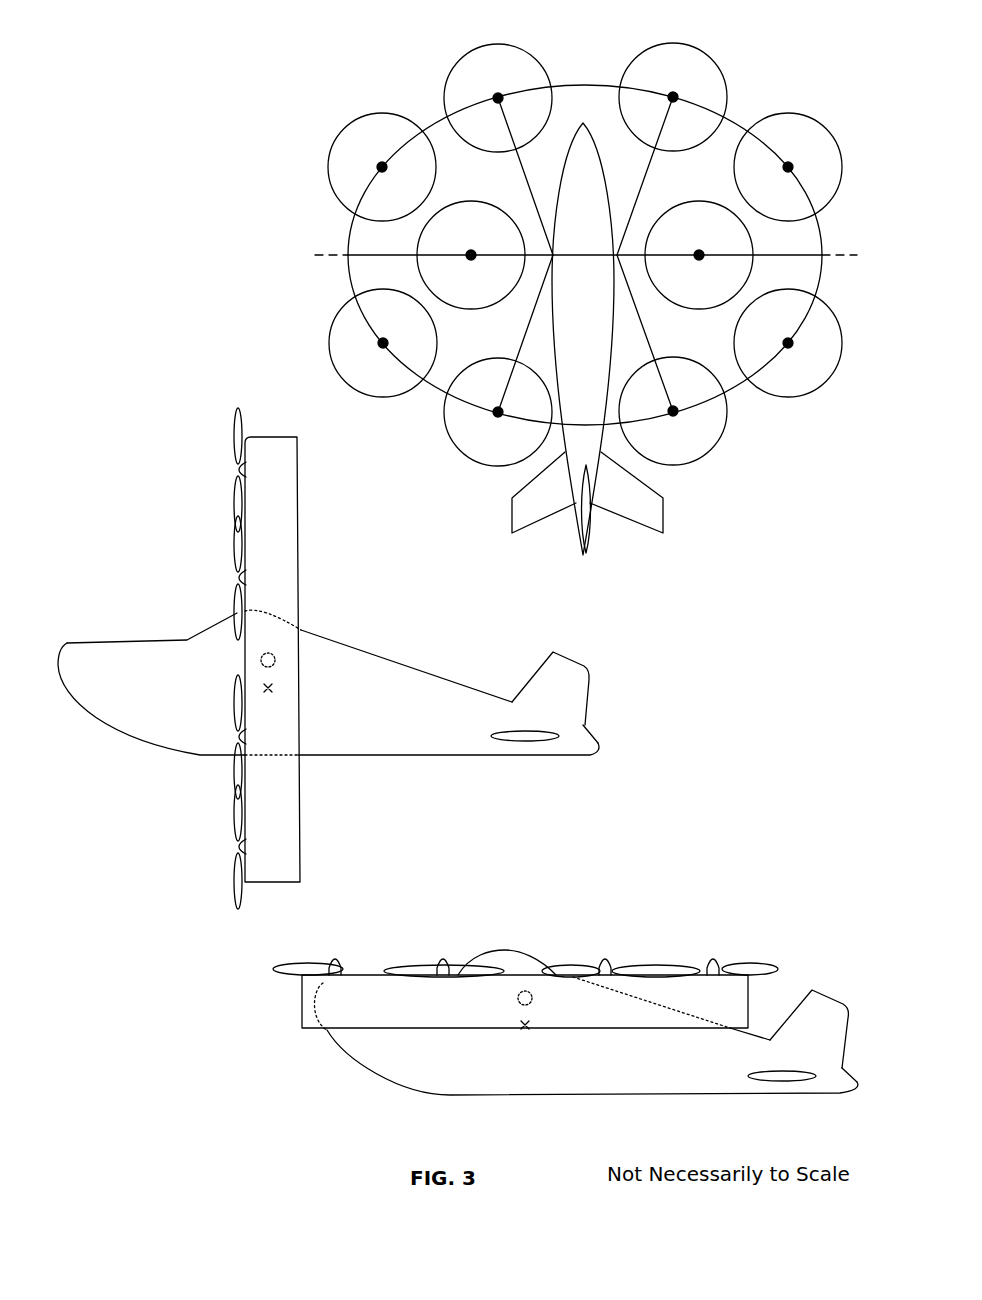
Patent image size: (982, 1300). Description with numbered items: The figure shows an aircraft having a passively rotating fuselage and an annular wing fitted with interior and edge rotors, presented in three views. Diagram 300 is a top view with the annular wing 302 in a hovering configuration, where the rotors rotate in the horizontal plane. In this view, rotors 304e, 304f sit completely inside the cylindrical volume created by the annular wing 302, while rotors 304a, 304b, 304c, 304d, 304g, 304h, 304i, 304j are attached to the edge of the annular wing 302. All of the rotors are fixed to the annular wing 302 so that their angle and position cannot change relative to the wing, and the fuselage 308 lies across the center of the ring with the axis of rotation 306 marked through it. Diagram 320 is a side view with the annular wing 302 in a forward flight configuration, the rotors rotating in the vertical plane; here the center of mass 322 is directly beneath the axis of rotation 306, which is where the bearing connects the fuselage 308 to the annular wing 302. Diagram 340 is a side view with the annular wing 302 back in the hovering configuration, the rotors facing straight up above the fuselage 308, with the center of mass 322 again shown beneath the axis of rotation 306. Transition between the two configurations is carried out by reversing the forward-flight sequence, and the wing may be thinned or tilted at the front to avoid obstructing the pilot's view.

The diagram 300 is at (300, 69).
The annular wing 302 is at (586, 84).
The rotor 304a is at (496, 44).
The rotor 304b is at (674, 43).
The rotor 304c is at (380, 113).
The rotor 304d is at (790, 113).
The rotor 304e is at (478, 192).
The rotor 304f is at (699, 201).
The rotor 304g is at (330, 346).
The rotor 304h is at (735, 346).
The rotor 304i is at (495, 467).
The rotor 304j is at (674, 467).
The axis of rotation 306 is at (331, 254).
The fuselage 308 is at (508, 952).
The diagram 320 is at (136, 406).
The center of mass 322 is at (276, 688).
The diagram 340 is at (698, 880).